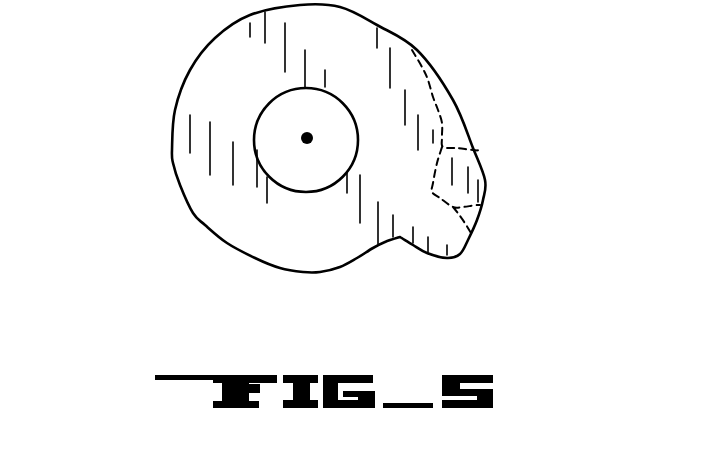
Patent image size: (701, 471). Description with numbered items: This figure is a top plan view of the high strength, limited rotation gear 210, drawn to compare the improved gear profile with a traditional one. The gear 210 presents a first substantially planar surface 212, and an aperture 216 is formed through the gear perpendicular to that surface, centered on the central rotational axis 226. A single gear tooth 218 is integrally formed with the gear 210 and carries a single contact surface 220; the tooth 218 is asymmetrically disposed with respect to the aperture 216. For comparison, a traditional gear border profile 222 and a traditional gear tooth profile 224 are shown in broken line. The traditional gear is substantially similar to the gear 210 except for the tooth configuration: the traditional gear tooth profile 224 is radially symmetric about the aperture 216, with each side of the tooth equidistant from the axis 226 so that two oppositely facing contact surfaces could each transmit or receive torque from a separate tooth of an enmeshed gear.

The limited rotation gear 210 is at (315, 173).
The first substantially planar surface 212 is at (236, 218).
The aperture 216 is at (276, 134).
The single gear tooth 218 is at (450, 243).
The contact surface 220 is at (432, 255).
The traditional gear border profile 222 is at (480, 150).
The traditional gear tooth profile 224 is at (480, 205).
The central rotational axis 226 is at (307, 146).